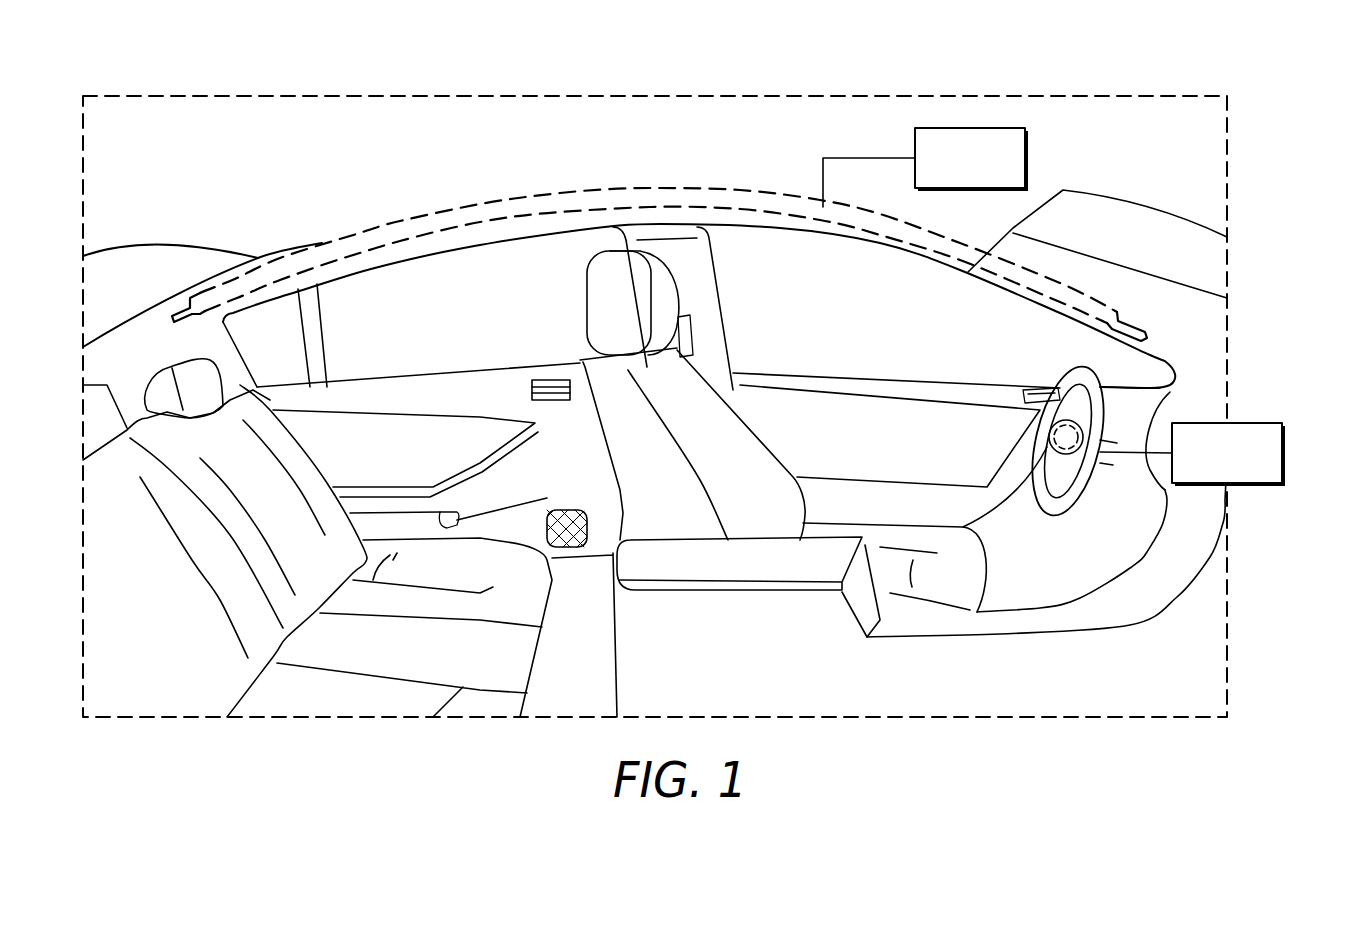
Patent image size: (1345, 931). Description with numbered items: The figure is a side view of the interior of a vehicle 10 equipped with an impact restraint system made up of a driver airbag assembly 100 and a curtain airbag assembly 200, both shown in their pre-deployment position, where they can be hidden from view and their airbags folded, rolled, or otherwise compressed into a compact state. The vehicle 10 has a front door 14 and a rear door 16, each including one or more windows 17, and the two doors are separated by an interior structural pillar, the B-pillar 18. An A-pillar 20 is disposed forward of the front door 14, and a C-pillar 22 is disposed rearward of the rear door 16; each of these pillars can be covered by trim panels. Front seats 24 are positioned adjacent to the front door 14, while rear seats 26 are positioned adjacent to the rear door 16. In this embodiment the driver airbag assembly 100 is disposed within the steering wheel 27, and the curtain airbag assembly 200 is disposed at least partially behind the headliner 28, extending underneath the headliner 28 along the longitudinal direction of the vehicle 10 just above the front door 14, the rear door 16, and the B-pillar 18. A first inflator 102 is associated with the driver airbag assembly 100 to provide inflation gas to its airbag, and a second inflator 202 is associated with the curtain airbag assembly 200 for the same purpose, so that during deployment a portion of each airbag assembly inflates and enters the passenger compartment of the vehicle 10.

The vehicle 10 is at (1116, 170).
The front door 14 is at (920, 378).
The rear door 16 is at (392, 378).
The windows 17 is at (493, 250).
The B-pillar 18 is at (712, 287).
The A-pillar 20 is at (1150, 273).
The C-pillar 22 is at (150, 305).
The front seats 24 is at (767, 452).
The rear seats 26 is at (303, 452).
The steering wheel 27 is at (1093, 367).
The headliner 28 is at (560, 232).
The driver airbag assembly 100 is at (1060, 484).
The first inflator 102 is at (1263, 423).
The curtain airbag assembly 200 is at (318, 236).
The second inflator 202 is at (1007, 128).